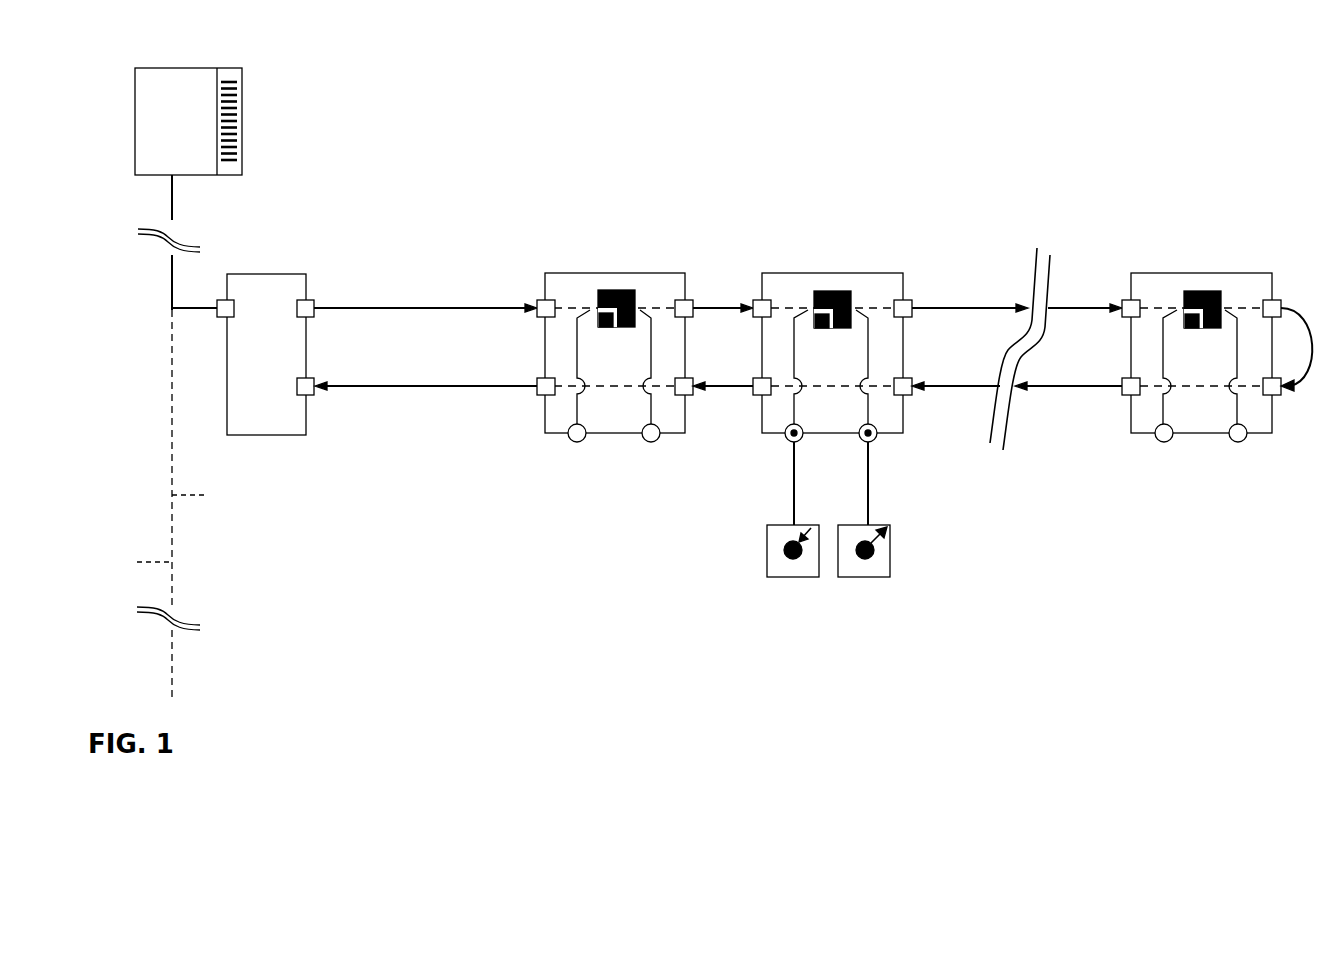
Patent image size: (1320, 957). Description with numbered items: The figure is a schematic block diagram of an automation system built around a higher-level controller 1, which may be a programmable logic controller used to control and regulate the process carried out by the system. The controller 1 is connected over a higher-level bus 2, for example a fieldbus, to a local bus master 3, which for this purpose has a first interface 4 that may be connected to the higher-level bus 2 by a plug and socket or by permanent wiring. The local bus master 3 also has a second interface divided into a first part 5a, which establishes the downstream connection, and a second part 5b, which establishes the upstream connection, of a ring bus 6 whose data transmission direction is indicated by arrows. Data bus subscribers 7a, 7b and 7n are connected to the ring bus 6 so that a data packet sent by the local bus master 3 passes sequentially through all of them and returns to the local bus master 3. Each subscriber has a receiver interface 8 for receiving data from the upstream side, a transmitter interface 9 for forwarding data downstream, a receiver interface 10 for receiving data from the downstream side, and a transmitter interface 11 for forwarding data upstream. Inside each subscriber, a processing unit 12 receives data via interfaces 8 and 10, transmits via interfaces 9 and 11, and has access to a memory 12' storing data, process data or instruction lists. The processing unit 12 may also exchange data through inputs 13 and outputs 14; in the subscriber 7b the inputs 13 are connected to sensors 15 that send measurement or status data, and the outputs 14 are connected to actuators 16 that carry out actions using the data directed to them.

The higher-level controller 1 is at (188, 121).
The higher-level bus 2 is at (170, 276).
The local bus master 3 is at (266, 354).
The first interface 4 is at (223, 315).
The first part of the second interface 5a is at (308, 300).
The second part of the second interface 5b is at (308, 396).
The ring bus 6 is at (412, 308).
The data bus subscriber 7a is at (615, 353).
The data bus subscriber 7b is at (832, 357).
The data bus subscriber 7n is at (1217, 357).
The interface 8 is at (545, 300).
The interface 9 is at (686, 300).
The interface 10 is at (686, 396).
The interface 11 is at (543, 396).
The processing unit 12 is at (635, 230).
The memory 12' is at (617, 345).
The inputs 13 is at (580, 442).
The outputs 14 is at (655, 442).
The sensors 15 is at (800, 578).
The actuators 16 is at (866, 578).